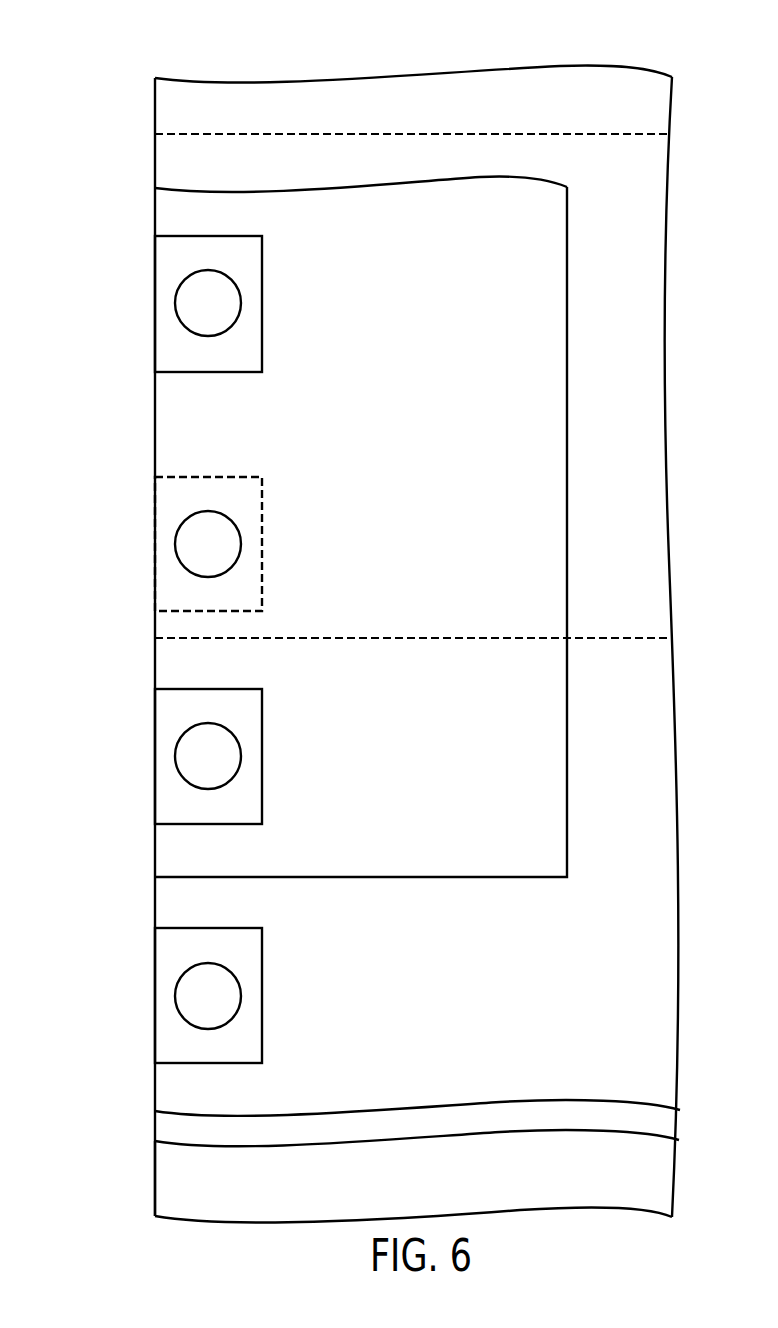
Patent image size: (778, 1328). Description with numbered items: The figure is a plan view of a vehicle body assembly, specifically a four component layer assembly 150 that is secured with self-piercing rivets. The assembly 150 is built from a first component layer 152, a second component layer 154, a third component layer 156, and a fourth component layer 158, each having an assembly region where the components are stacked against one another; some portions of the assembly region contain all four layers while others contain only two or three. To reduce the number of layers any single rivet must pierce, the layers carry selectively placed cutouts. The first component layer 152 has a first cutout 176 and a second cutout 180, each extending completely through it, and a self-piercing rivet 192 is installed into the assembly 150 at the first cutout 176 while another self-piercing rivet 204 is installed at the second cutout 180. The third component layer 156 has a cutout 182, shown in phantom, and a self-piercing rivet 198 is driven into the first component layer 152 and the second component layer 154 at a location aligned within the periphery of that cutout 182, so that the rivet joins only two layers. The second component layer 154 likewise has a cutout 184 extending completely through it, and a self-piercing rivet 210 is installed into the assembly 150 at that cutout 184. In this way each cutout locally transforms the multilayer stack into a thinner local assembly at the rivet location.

The four component layer assembly 150 is at (100, 69).
The first component layer 152 is at (538, 233).
The second component layer 154 is at (207, 95).
The third component layer 156 is at (163, 162).
The fourth component layer 158 is at (301, 1181).
The first cutout 176 is at (262, 303).
The second cutout 180 is at (262, 755).
The cutout 182 is at (204, 476).
The cutout 184 is at (262, 998).
The self-piercing rivet 192 is at (174, 305).
The self-piercing rivet 198 is at (174, 545).
The self-piercing rivet 204 is at (174, 754).
The self-piercing rivet 210 is at (174, 996).